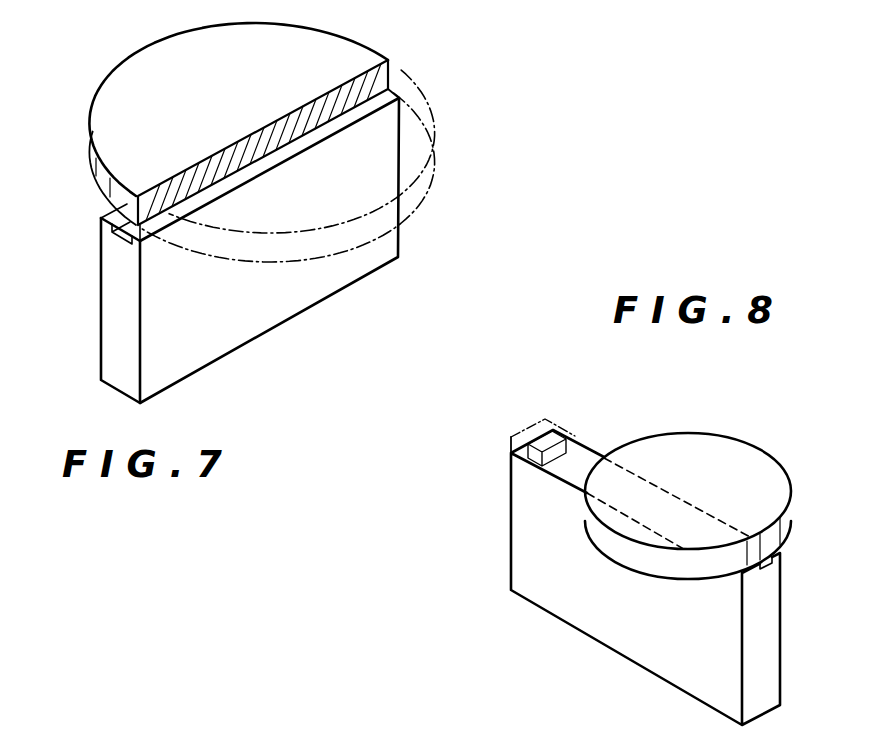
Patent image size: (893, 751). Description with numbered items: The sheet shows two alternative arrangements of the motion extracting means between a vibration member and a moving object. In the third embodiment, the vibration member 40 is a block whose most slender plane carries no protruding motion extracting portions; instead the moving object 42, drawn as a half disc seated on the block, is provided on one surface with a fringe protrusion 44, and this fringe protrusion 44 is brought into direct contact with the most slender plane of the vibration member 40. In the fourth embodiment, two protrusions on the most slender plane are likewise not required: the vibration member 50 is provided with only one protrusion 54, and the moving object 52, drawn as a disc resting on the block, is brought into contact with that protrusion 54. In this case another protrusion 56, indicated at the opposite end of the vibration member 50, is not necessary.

In FIG. 7, the vibration member 40 is at (267, 287).
In FIG. 7, the moving object 42 is at (147, 80).
In FIG. 7, the fringe protrusion 44 is at (118, 225).
In FIG. 8, the vibration member 50 is at (540, 550).
In FIG. 8, the moving object 52 is at (711, 452).
In FIG. 8, the protrusion 54 is at (784, 556).
In FIG. 8, the protrusion 56 is at (558, 424).